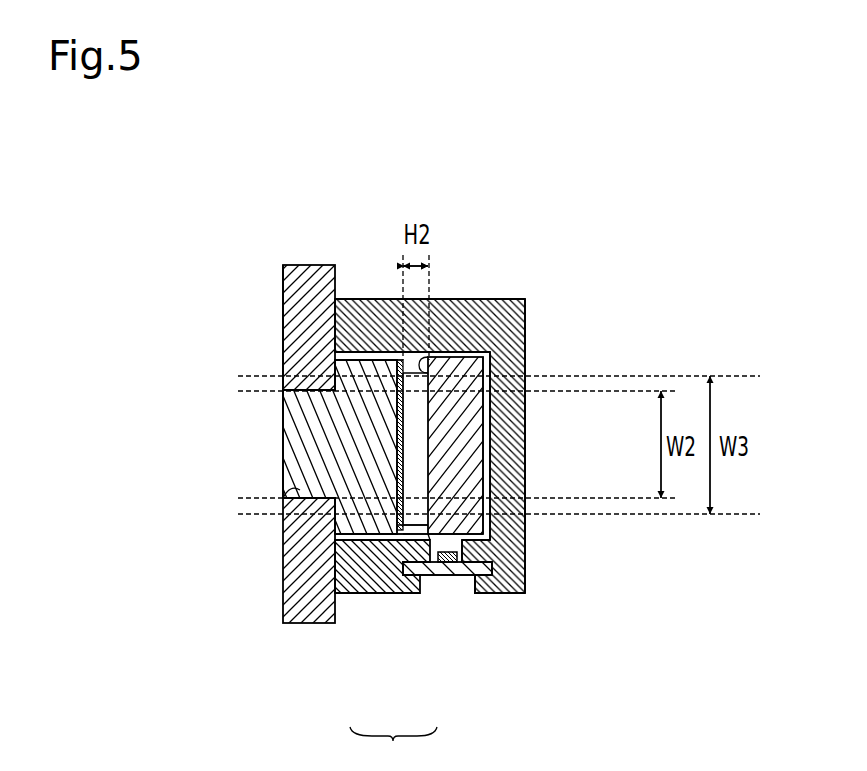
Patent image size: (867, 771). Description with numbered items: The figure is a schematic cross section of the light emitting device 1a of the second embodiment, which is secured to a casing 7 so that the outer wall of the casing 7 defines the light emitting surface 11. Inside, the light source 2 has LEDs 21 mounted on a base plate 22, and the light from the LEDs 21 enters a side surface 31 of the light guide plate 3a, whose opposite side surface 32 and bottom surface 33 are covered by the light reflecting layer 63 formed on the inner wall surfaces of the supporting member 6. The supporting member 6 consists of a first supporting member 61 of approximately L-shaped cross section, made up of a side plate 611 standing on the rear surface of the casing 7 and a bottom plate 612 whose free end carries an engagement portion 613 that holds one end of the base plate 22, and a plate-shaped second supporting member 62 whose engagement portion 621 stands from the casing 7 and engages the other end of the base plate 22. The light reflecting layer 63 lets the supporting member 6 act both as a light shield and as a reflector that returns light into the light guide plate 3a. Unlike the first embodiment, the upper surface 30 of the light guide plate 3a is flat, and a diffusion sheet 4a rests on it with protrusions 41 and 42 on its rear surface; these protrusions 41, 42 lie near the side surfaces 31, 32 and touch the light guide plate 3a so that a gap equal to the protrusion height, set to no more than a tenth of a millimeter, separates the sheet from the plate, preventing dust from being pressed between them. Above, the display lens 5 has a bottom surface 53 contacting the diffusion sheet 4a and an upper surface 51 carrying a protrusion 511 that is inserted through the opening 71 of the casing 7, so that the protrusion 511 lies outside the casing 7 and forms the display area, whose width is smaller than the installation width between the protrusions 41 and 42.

The light emitting device 1a is at (525, 222).
The light source 2 is at (453, 576).
The LEDs 21 is at (452, 563).
The base plate 22 is at (433, 576).
The light guide plate 3a is at (490, 360).
The upper surface 30 is at (432, 388).
The side surface 31 is at (473, 549).
The side surface 32 is at (450, 350).
The bottom surface 33 is at (500, 460).
The diffusion sheet 4a is at (363, 594).
The protrusion 41 is at (428, 372).
The protrusion 42 is at (398, 532).
The display lens 5 is at (305, 410).
The upper surface 51 is at (283, 413).
The protrusion 511 is at (283, 460).
The bottom surface 53 is at (367, 362).
The supporting member 6 is at (393, 749).
The first supporting member 61 is at (515, 590).
The side plate 611 is at (402, 357).
The bottom plate 612 is at (512, 372).
The engagement portion 613 is at (495, 568).
The second supporting member 62 is at (410, 534).
The engagement portion 621 is at (402, 540).
The light reflecting layer 63 is at (492, 490).
The casing 7 is at (297, 266).
The opening 71 is at (285, 498).
The light emitting surface 11 is at (283, 322).